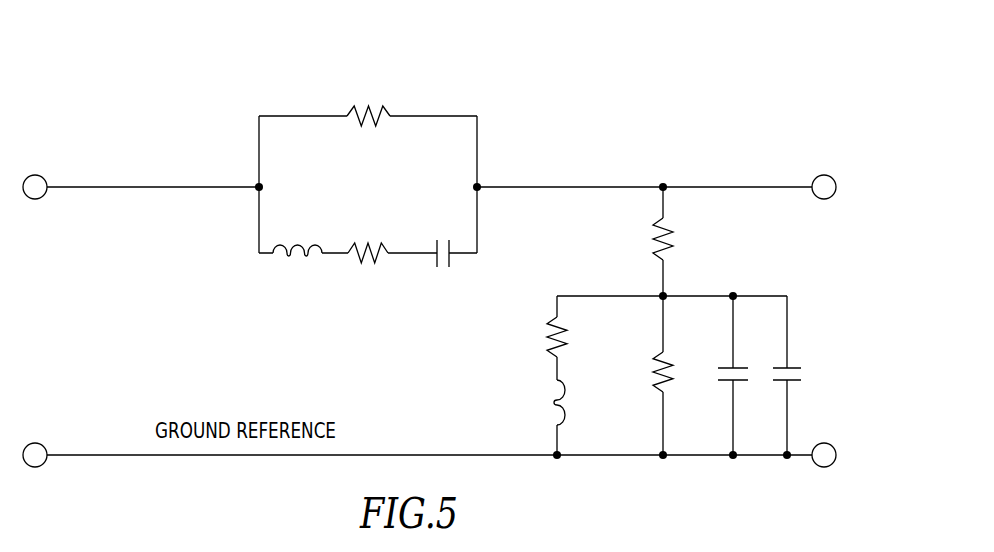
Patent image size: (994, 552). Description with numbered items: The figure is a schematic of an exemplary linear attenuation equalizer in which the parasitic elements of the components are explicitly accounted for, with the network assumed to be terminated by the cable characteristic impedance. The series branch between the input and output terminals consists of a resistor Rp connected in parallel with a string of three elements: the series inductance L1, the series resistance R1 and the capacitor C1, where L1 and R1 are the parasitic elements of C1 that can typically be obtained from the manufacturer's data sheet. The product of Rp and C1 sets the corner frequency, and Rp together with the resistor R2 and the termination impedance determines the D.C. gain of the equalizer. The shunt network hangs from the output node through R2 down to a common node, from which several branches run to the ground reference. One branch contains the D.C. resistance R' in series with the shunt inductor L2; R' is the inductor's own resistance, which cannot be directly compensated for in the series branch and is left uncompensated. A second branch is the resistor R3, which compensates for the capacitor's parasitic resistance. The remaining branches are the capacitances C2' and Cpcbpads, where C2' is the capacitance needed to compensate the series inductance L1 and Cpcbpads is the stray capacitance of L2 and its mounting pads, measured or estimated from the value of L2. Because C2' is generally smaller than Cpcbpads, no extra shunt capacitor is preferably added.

The parallel resistor Rp is at (368, 105).
The series inductance L1 is at (304, 248).
The series resistance R1 is at (368, 246).
The capacitor C1 is at (440, 240).
The resistor R2 is at (655, 232).
The D.C. resistance of the inductance R' is at (546, 313).
The shunt inductor L2 is at (548, 401).
The resistor R3 is at (653, 368).
The capacitance C2' is at (719, 347).
The stray capacitance Cpcbpads is at (843, 357).